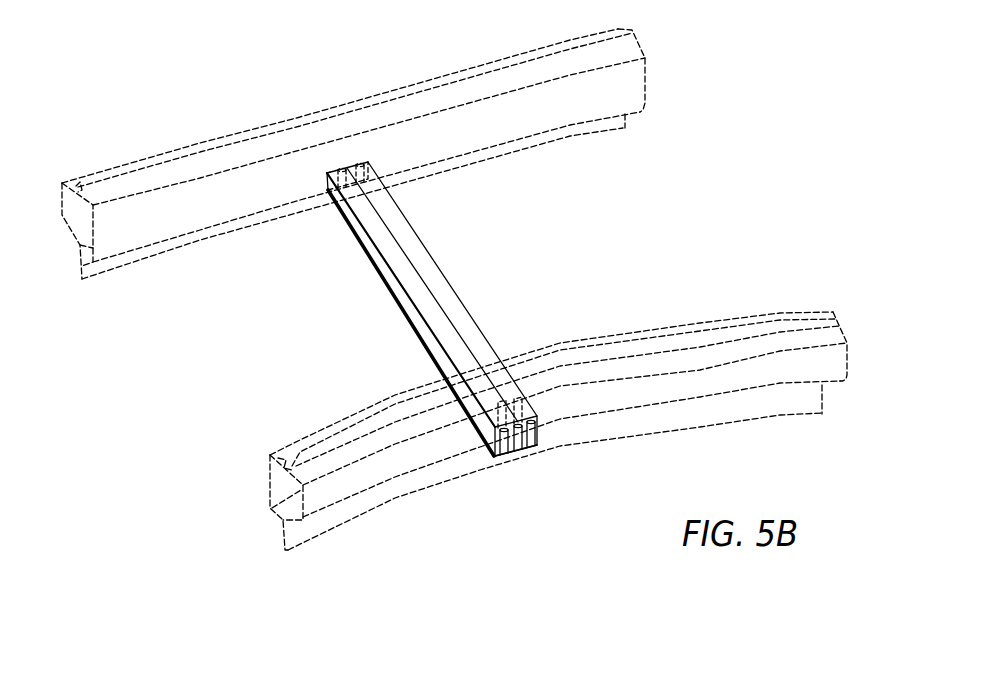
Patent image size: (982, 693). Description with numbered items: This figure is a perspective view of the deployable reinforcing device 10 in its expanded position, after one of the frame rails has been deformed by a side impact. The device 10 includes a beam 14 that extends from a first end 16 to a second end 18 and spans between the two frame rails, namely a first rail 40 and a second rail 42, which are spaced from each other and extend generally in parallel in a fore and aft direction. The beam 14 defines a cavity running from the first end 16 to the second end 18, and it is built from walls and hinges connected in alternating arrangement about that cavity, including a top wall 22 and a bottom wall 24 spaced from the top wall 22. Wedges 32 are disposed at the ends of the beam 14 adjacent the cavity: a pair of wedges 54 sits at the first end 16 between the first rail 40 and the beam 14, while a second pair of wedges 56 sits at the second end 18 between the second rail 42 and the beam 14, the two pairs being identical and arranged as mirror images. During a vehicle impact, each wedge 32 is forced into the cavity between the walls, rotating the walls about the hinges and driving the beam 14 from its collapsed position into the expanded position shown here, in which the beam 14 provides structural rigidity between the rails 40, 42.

The deployable reinforcing device 10 is at (490, 228).
The beam 14 is at (434, 309).
The first end 16 is at (525, 486).
The second end 18 is at (333, 113).
The top wall 22 is at (446, 291).
The bottom wall 24 is at (512, 462).
The wedge 32 is at (356, 166).
The first rail 40 is at (287, 538).
The second rail 42 is at (78, 262).
The pair of wedges 54 is at (523, 464).
The second pair of wedges 56 is at (323, 169).